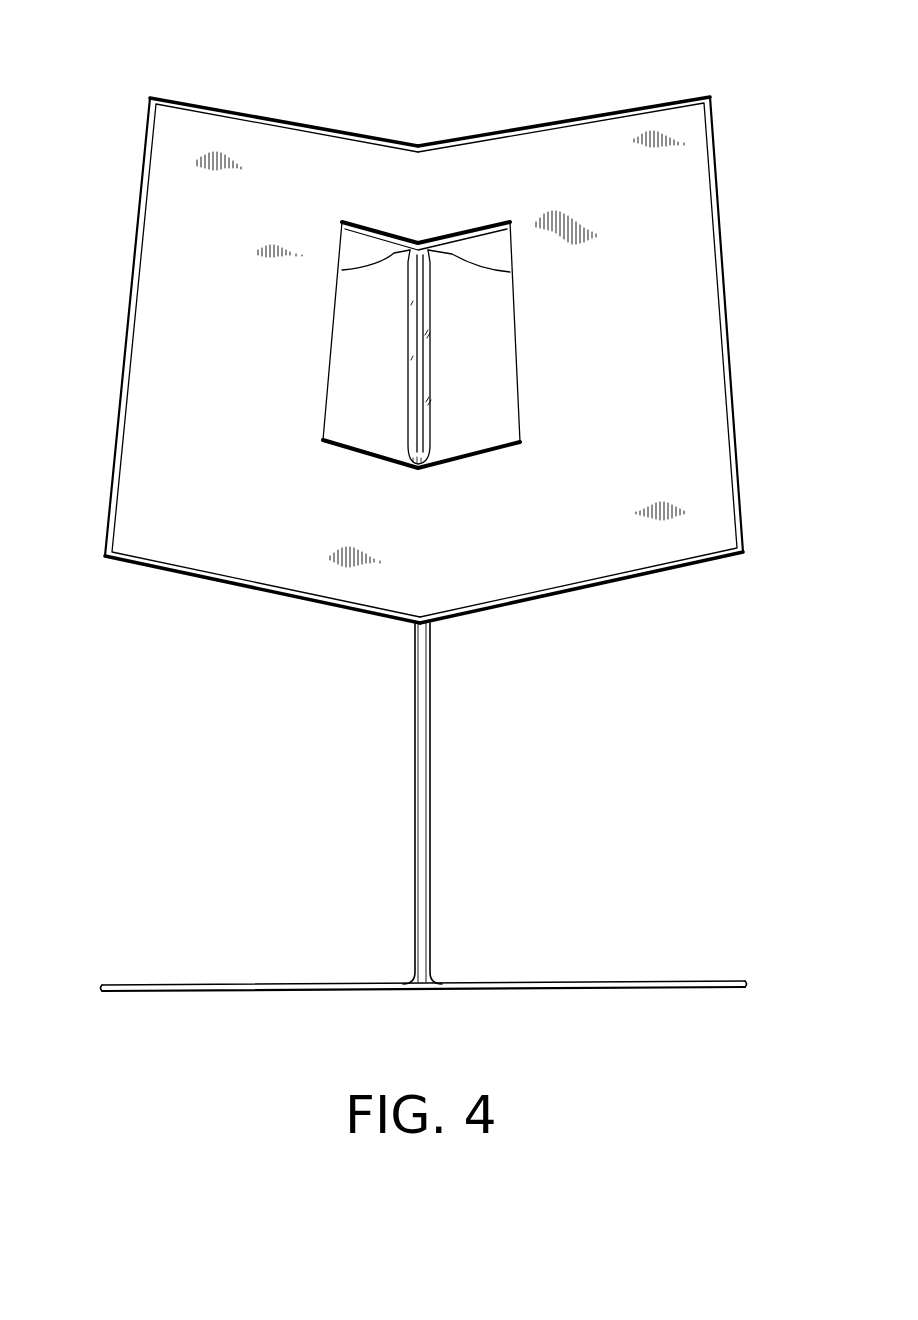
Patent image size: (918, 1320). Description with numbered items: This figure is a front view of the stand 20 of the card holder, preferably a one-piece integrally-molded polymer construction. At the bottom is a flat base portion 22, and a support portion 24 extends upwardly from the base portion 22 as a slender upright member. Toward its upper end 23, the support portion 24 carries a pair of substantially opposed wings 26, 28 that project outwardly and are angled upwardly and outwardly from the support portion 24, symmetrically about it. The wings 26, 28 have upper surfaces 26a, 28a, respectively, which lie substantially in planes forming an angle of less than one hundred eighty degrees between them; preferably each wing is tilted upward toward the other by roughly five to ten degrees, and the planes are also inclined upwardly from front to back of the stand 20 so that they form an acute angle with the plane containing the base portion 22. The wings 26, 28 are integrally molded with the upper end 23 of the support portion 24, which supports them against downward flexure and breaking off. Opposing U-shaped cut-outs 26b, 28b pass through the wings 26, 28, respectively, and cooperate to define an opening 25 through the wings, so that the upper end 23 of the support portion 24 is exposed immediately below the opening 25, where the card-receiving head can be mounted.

The stand 20 is at (439, 521).
The base portion 22 is at (477, 985).
The upper end 23 is at (422, 402).
The support portion 24 is at (424, 921).
The opening 25 is at (429, 363).
The wing 26 is at (627, 360).
The upper surface 26a is at (602, 313).
The U-shaped cut-out 26b is at (462, 252).
The wing 28 is at (231, 360).
The upper surface 28a is at (207, 373).
The U-shaped cut-out 28b is at (386, 247).